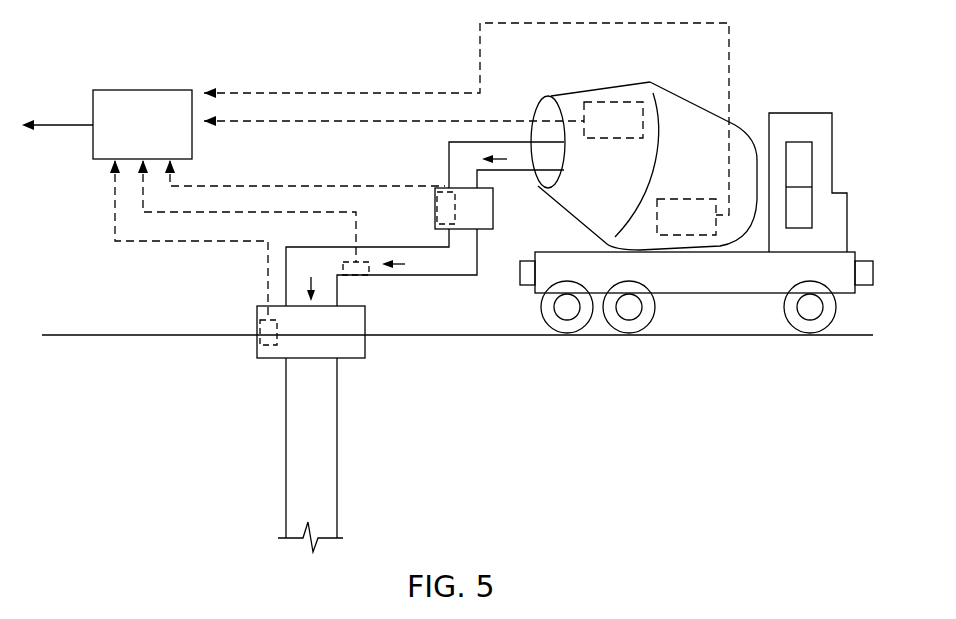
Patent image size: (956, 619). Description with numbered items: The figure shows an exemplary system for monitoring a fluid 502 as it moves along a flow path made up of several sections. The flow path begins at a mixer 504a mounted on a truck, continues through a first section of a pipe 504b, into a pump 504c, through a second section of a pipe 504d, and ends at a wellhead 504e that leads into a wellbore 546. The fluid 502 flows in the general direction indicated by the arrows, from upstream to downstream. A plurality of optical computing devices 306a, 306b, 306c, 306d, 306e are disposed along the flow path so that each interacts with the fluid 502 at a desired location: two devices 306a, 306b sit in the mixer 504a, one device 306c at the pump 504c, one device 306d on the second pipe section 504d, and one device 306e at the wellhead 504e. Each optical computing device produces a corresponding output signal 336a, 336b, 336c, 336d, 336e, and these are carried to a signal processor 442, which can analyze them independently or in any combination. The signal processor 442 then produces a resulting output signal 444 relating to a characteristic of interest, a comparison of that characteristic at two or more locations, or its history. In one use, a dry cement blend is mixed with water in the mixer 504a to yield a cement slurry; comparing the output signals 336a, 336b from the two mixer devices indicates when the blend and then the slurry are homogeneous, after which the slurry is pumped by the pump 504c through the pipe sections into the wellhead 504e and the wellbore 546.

The signal processor 442 is at (159, 136).
The resulting output signal 444 is at (57, 116).
The output signal 336a is at (466, 108).
The output signal 336b is at (394, 112).
The output signal 336c is at (305, 173).
The output signal 336d is at (247, 211).
The output signal 336e is at (189, 240).
The fluid 502 is at (711, 170).
The mixer 504a is at (613, 87).
The first section of a pipe 504b is at (449, 170).
The pump 504c is at (493, 210).
The second section of a pipe 504d is at (450, 277).
The wellhead 504e is at (257, 312).
The optical computing device 306a is at (709, 229).
The optical computing device 306b is at (636, 132).
The optical computing device 306c is at (437, 209).
The optical computing device 306d is at (357, 277).
The optical computing device 306e is at (258, 344).
The wellbore 546 is at (338, 395).